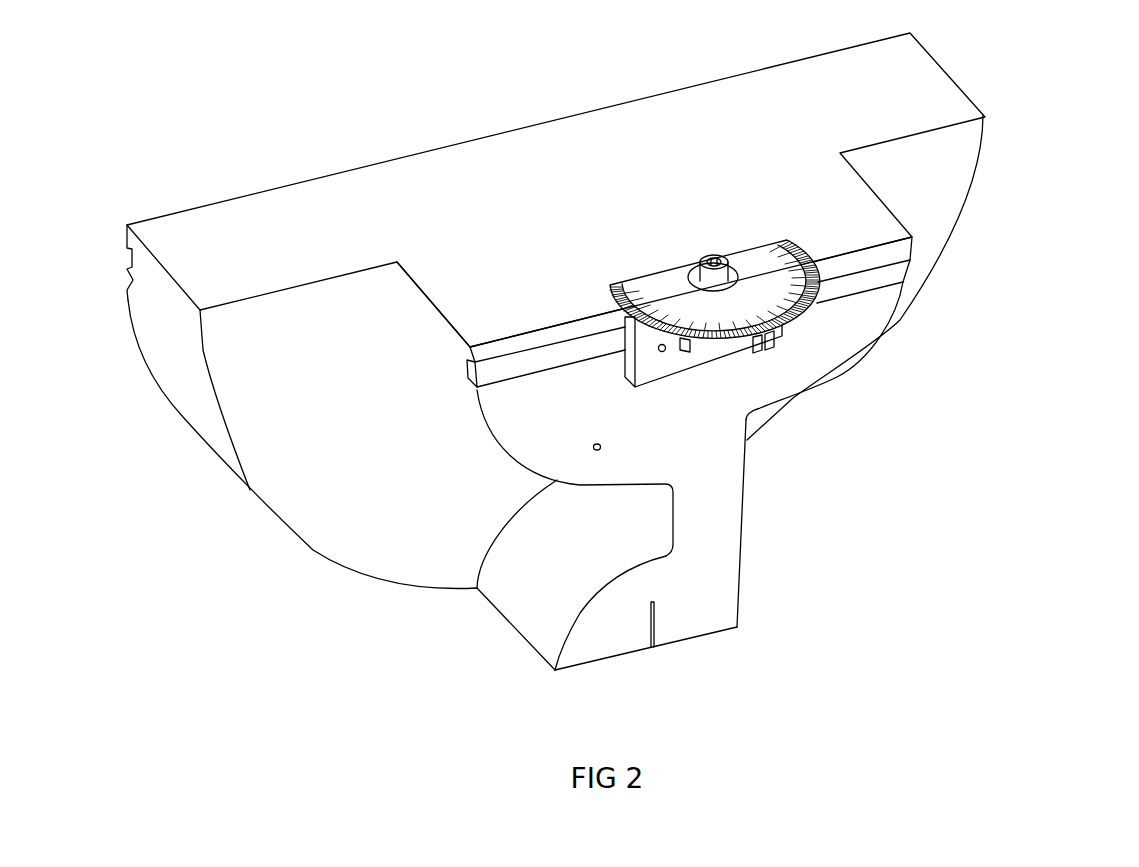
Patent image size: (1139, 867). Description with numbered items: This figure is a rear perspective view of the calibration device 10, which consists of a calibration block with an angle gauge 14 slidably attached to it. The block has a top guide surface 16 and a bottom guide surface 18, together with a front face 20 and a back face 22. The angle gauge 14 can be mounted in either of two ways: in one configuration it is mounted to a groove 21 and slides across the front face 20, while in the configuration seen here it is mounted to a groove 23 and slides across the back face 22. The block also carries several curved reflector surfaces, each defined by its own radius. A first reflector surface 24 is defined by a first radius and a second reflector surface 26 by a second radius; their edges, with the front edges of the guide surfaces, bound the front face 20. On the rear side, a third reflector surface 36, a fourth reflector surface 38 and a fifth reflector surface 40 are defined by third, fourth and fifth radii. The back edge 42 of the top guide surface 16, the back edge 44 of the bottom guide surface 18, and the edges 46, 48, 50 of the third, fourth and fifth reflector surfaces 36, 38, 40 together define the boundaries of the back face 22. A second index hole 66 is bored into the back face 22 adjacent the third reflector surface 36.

The calibration device 10 is at (235, 107).
The angle gauge 14 is at (505, 125).
The top guide surface 16 is at (660, 128).
The bottom guide surface 18 is at (700, 638).
The front face 20 is at (130, 335).
The groove 21 is at (130, 268).
The back face 22 is at (714, 500).
The groove 23 is at (507, 372).
The first reflector surface 24 is at (180, 383).
The second reflector surface 26 is at (975, 187).
The third reflector surface 36 is at (436, 350).
The fourth reflector surface 38 is at (900, 292).
The fifth reflector surface 40 is at (533, 578).
The back edge of the top guide surface 42 is at (503, 335).
The back edge of the bottom guide surface 44 is at (598, 655).
The edge of the third reflector surface 46 is at (482, 400).
The edge of the fourth reflector surface 48 is at (795, 398).
The edge of the fifth reflector surface 50 is at (565, 615).
The second index hole 66 is at (603, 445).